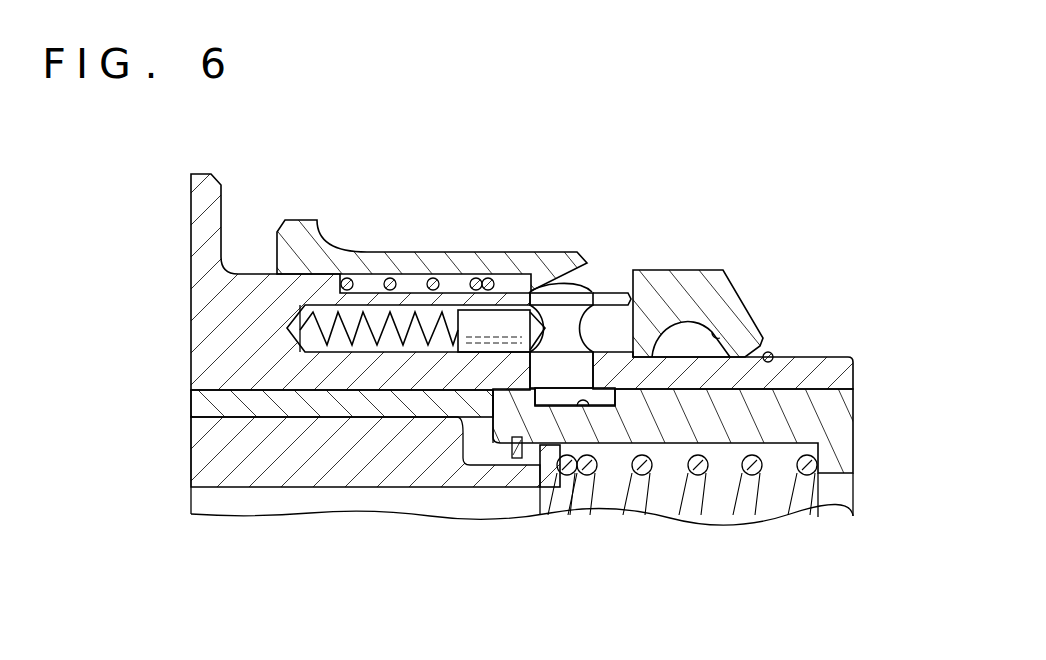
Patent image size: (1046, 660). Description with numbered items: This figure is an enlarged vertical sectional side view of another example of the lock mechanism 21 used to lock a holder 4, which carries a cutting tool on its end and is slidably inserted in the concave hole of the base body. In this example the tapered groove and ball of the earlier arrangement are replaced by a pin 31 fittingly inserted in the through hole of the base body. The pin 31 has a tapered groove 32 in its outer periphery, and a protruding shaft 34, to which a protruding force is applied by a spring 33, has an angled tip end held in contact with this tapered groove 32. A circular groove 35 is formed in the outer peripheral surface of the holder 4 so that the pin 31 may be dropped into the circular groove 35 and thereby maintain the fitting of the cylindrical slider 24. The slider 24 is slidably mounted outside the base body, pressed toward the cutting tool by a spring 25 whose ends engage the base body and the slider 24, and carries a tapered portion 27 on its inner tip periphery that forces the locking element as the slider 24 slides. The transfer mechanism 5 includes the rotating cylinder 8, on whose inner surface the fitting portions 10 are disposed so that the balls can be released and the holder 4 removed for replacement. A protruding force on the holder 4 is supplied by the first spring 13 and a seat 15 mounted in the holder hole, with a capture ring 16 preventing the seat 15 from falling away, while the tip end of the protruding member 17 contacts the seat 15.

The holder 4 is at (838, 417).
The transfer mechanism 5 is at (745, 264).
The rotating cylinder 8 is at (687, 283).
The fitting portions 10 is at (720, 337).
The first spring 13 is at (745, 503).
The seat 15 is at (543, 480).
The capture ring 16 is at (513, 458).
The protruding member 17 is at (318, 472).
The lock mechanism 21 is at (394, 242).
The cylindrical slider 24 is at (303, 237).
The spring 25 is at (476, 278).
The tapered portion 27 is at (545, 288).
The pin 31 is at (573, 296).
The tapered groove 32 is at (607, 300).
The spring 33 is at (395, 323).
The protruding shaft 34 is at (503, 323).
The circular groove 35 is at (583, 406).